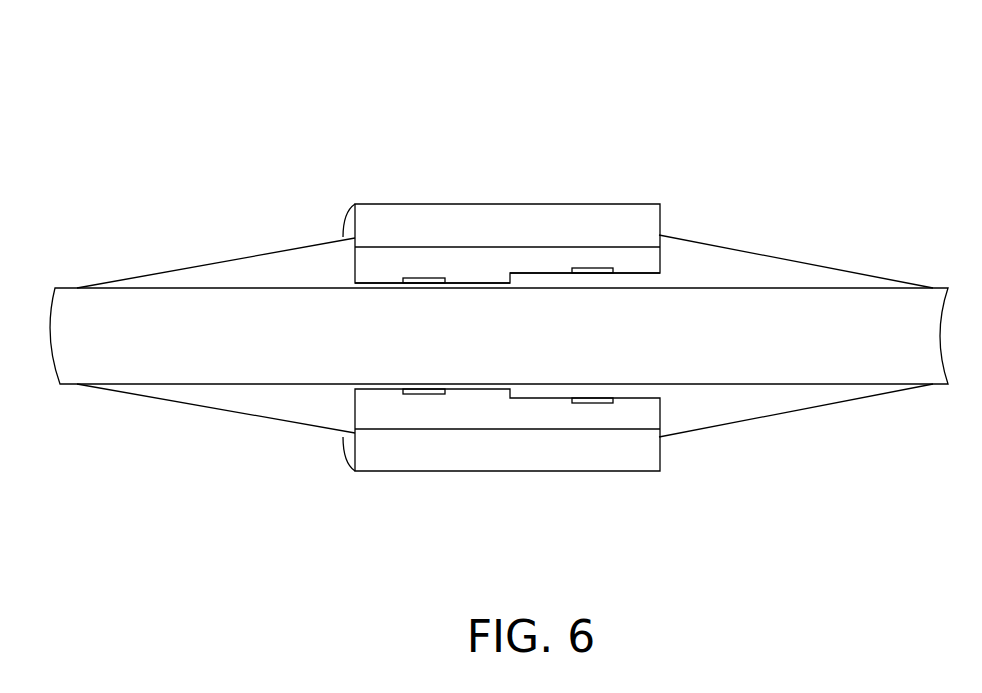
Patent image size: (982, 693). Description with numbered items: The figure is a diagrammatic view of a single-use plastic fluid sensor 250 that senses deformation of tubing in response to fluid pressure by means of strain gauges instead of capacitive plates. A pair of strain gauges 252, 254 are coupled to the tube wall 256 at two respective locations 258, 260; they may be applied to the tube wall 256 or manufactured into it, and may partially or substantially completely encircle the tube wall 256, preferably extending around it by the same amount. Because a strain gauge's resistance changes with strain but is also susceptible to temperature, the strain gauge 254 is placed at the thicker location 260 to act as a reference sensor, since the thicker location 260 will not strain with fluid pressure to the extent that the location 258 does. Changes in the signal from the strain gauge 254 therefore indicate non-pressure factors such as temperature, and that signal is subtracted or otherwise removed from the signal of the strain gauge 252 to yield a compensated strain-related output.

The single-use plastic fluid sensor 250 is at (676, 74).
The strain gauge 252 is at (425, 279).
The strain gauge 254 is at (592, 267).
The tube wall 256 is at (351, 291).
The location 258 is at (420, 290).
The thicker location 260 is at (580, 290).